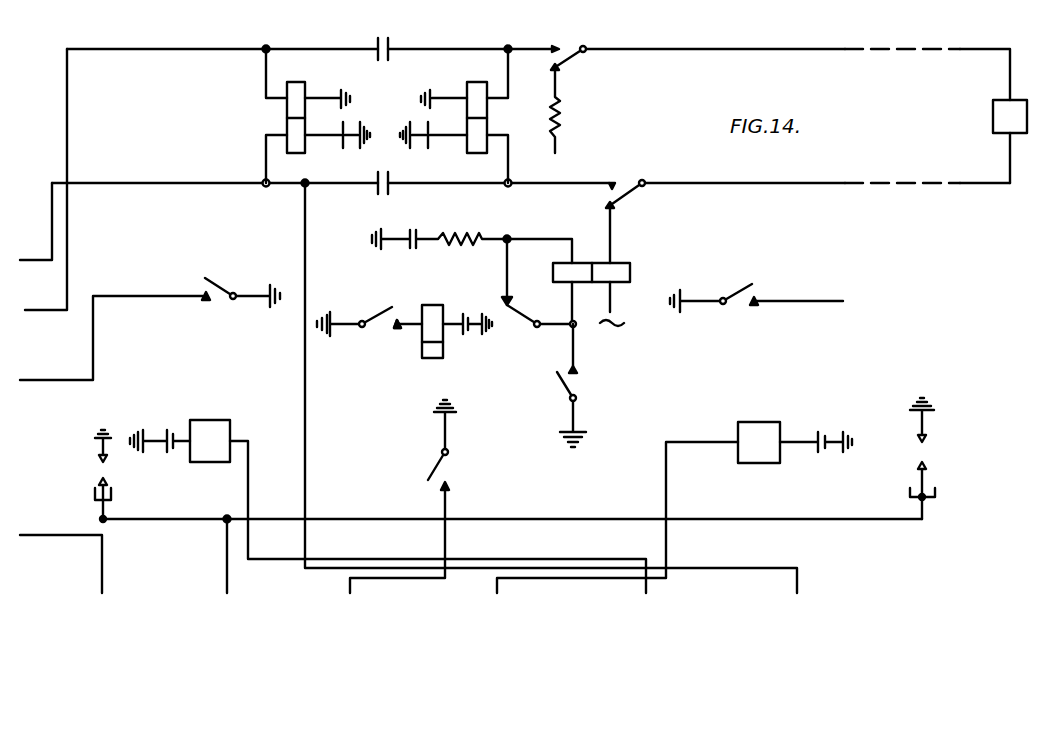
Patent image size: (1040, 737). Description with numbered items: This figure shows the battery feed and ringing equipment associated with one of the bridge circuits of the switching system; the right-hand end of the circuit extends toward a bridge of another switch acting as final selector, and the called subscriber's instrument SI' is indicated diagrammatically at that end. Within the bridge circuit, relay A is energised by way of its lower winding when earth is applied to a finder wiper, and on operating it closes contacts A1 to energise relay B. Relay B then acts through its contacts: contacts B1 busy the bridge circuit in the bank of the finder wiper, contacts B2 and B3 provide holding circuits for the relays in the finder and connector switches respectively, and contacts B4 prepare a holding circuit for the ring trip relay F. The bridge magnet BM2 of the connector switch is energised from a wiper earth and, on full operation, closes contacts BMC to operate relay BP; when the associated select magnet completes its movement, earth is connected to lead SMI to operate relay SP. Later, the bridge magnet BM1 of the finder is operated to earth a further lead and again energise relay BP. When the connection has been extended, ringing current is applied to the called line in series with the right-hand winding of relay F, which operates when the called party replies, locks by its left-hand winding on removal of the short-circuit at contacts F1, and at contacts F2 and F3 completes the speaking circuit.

The relay A is at (328, 97).
The contacts F2 is at (568, 87).
The contacts F3 is at (625, 209).
The called subscriber's instrument SI' is at (991, 116).
The contacts F1 is at (539, 296).
The contacts A1 is at (369, 311).
The contacts B4 is at (582, 385).
The contacts B3 is at (756, 287).
The contacts B2 is at (150, 318).
The bridge magnet of the finder BM1 is at (388, 493).
The contacts BMC is at (488, 460).
The contacts B1 is at (416, 496).
The bridge magnet of the connector switch BM2 is at (674, 493).
The lead SMI is at (61, 564).